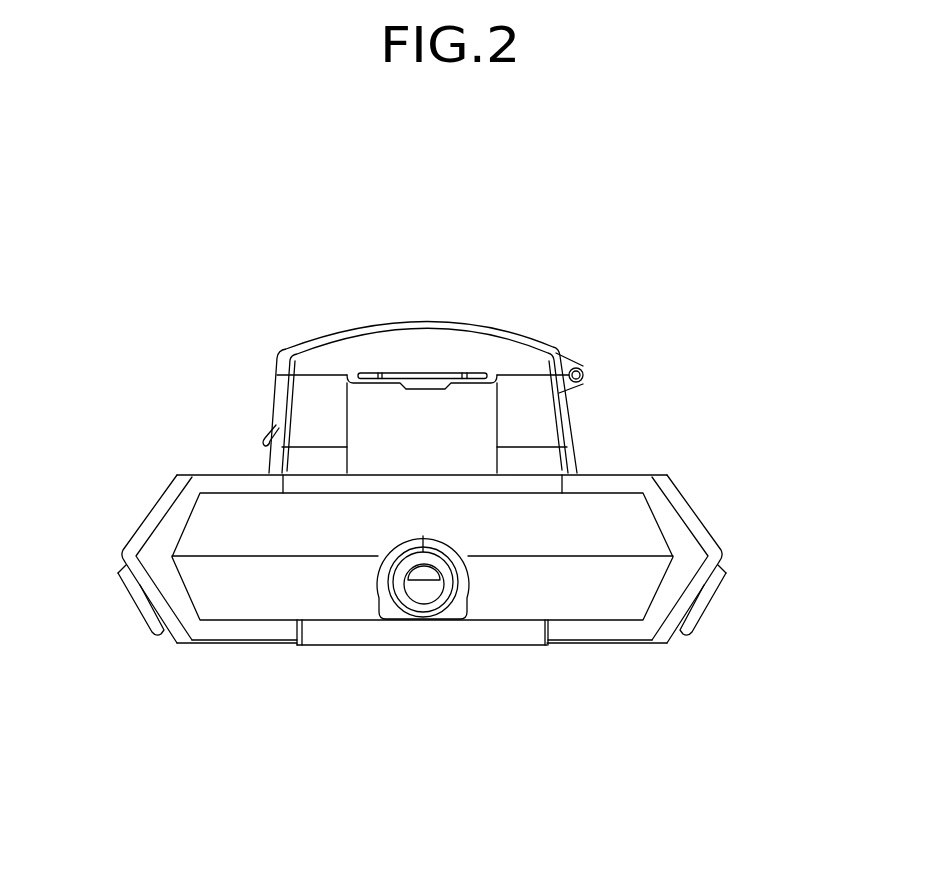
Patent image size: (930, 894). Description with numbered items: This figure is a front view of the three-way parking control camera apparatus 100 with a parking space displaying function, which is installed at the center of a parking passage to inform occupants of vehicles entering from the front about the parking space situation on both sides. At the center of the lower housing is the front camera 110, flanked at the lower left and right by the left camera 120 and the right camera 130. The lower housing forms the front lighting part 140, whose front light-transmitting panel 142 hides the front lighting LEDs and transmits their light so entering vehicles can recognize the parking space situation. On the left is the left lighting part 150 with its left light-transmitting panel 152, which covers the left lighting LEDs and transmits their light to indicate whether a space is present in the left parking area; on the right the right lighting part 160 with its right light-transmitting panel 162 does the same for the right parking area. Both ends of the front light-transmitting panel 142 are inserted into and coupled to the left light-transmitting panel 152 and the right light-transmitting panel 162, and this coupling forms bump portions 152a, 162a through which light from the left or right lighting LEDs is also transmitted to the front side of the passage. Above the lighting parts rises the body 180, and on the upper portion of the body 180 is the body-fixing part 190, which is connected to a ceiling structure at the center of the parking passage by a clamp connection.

The three-way parking control camera apparatus 100 is at (597, 263).
The front camera 110 is at (422, 620).
The left camera 120 is at (163, 627).
The right camera 130 is at (693, 620).
The front lighting part 140 is at (357, 692).
The front light-transmitting panel 142 is at (517, 605).
The left lighting part 150 is at (110, 527).
The left light-transmitting panel 152 is at (167, 503).
The bump portion of the left light-transmitting panel 152a is at (253, 632).
The right lighting part 160 is at (732, 527).
The right light-transmitting panel 162 is at (676, 503).
The bump portion of the right light-transmitting panel 162a is at (600, 630).
The body 180 is at (418, 488).
The body-fixing part 190 is at (443, 322).